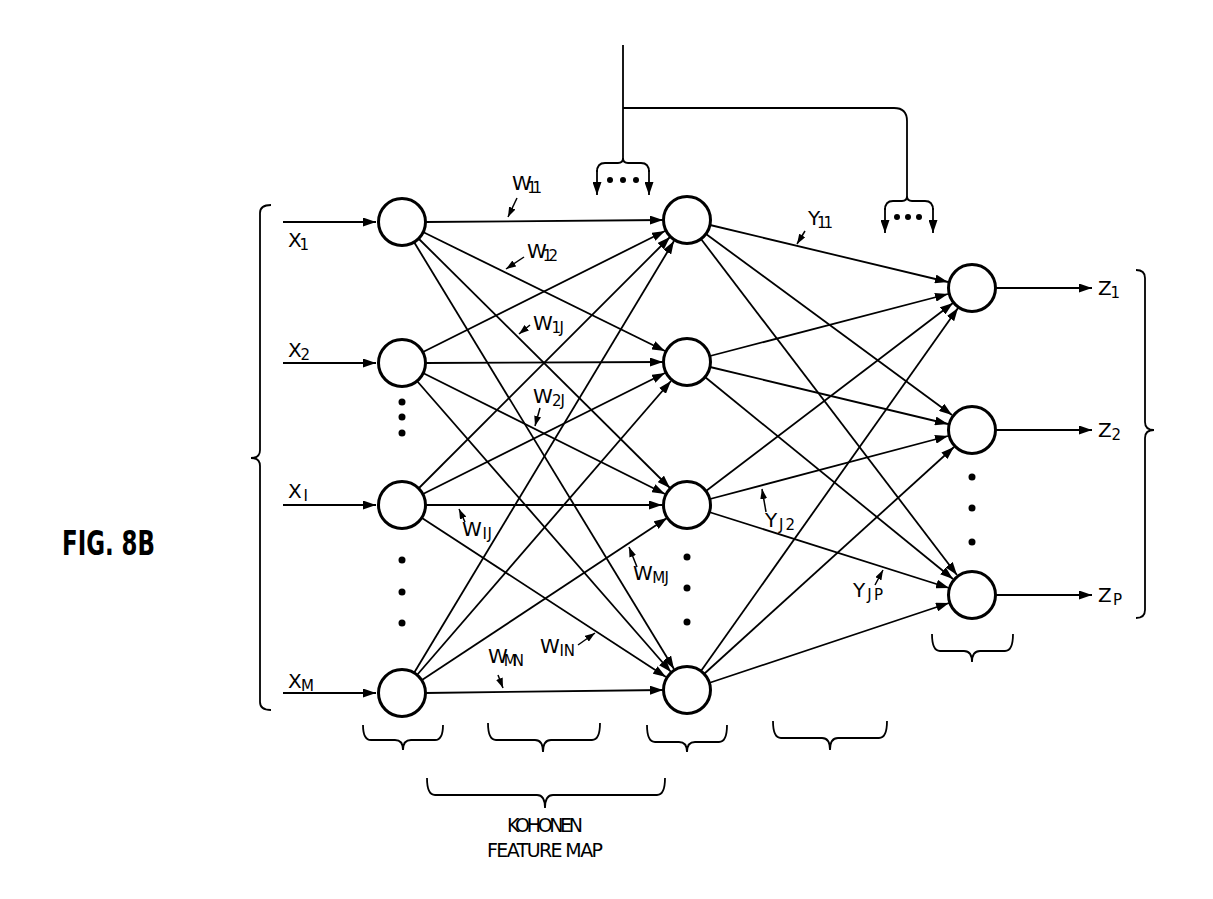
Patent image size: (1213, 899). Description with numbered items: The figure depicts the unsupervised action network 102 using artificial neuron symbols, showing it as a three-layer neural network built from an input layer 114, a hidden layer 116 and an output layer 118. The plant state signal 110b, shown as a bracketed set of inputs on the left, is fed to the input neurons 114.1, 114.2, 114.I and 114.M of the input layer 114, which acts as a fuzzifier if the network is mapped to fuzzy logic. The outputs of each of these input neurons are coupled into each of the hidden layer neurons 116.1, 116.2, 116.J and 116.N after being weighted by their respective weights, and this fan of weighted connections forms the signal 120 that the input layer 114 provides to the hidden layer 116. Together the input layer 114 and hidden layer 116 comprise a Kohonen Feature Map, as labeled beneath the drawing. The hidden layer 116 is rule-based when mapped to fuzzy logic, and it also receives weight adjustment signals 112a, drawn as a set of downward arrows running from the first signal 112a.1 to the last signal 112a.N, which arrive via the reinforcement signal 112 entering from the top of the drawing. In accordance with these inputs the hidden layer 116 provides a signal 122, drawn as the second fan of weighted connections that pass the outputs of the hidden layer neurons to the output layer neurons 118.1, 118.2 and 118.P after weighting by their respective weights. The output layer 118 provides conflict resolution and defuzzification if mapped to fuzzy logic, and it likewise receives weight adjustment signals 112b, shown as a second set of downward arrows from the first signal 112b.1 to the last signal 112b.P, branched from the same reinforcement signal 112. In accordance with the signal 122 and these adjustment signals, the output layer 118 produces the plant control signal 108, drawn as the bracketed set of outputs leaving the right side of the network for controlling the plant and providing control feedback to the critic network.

The unsupervised action network 102 is at (320, 766).
The plant control signal 108 is at (1165, 444).
The plant state signal 110b is at (250, 458).
The reinforcement signal 112 is at (625, 63).
The hidden layer weight adjustment signals 112a is at (643, 109).
The first hidden layer weight adjustment signal 112a.1 is at (596, 165).
The Nth hidden layer weight adjustment signal 112a.N is at (651, 162).
The output layer weight adjustment signals 112b is at (823, 105).
The first output layer weight adjustment signal 112b.1 is at (882, 207).
The Pth output layer weight adjustment signal 112b.P is at (937, 206).
The input layer 114 is at (403, 754).
The first input neuron 114.1 is at (394, 201).
The second input neuron 114.2 is at (394, 343).
The Ith input neuron 114.I is at (387, 486).
The Mth input neuron 114.M is at (388, 672).
The hidden layer 116 is at (687, 754).
The first hidden layer neuron 116.1 is at (695, 197).
The second hidden layer neuron 116.2 is at (697, 338).
The Jth hidden layer neuron 116.J is at (697, 517).
The Nth hidden layer neuron 116.N is at (700, 696).
The output layer 118 is at (972, 663).
The first output layer neuron 118.1 is at (985, 266).
The second output layer neuron 118.2 is at (992, 408).
The Pth output layer neuron 118.P is at (992, 579).
The input layer output signal 120 is at (544, 753).
The hidden layer output signal 122 is at (830, 751).